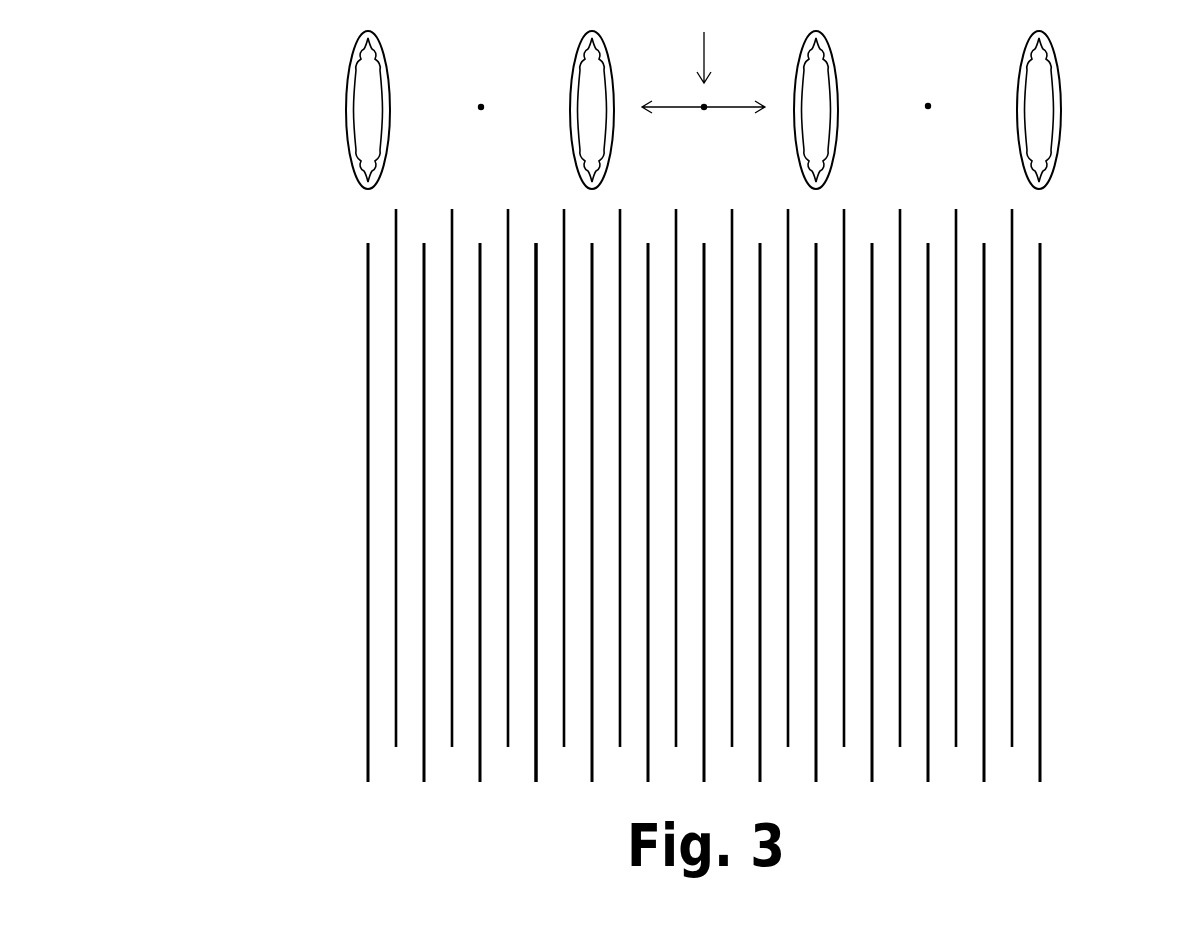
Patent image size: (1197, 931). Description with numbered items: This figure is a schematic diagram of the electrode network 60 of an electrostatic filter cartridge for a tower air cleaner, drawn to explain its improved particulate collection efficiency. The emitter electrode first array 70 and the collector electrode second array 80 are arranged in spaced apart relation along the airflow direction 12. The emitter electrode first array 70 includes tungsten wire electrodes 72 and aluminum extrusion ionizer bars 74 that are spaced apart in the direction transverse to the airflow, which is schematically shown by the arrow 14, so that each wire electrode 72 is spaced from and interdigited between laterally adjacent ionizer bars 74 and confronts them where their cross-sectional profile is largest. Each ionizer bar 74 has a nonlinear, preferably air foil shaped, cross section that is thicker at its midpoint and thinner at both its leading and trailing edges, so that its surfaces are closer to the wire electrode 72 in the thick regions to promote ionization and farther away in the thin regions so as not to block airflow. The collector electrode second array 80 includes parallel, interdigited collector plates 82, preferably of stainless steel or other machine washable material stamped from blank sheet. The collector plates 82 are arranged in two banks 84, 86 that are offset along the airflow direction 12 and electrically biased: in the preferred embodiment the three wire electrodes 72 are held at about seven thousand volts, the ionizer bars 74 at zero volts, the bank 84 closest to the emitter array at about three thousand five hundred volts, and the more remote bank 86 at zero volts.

The airflow direction 12 is at (704, 56).
The arrow 14 is at (723, 108).
The electrode network 60 is at (697, 453).
The emitter electrode first array 70 is at (871, 96).
The wire electrode 72 is at (481, 102).
The ionizer bar 74 is at (833, 60).
The collector electrode second array 80 is at (780, 453).
The collector plate 82 is at (1041, 396).
The bank 84 is at (530, 212).
The bank 86 is at (558, 233).